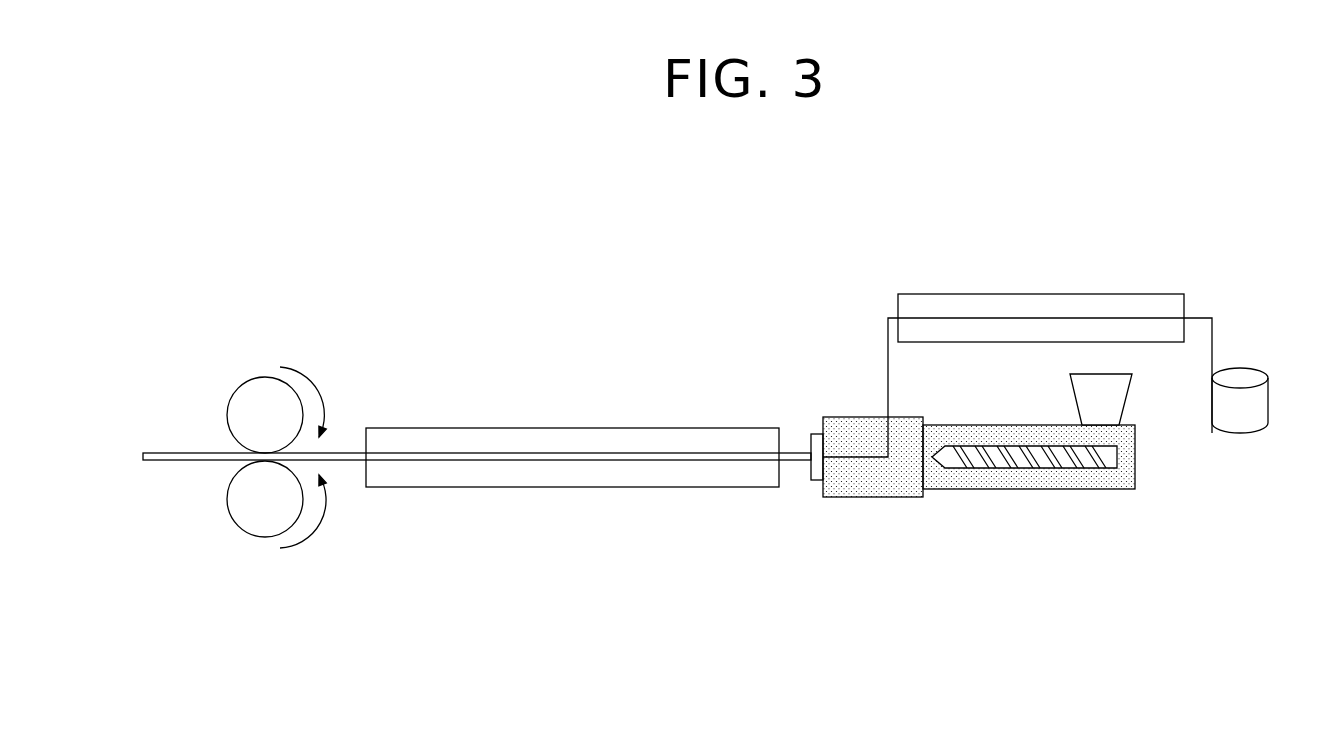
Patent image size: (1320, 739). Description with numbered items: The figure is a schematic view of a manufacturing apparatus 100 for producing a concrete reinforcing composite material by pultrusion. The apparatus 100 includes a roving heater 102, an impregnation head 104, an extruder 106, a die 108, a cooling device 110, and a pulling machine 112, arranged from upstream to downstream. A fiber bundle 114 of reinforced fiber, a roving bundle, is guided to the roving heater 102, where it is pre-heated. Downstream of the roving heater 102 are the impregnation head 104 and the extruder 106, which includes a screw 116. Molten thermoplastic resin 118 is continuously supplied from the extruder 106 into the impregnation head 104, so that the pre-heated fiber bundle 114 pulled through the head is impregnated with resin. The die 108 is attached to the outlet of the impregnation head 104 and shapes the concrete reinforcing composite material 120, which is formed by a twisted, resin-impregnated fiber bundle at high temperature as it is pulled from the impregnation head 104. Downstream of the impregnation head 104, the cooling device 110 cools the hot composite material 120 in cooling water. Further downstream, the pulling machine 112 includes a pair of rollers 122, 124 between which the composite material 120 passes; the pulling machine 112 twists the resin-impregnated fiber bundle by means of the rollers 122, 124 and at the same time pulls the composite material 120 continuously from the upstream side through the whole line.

The manufacturing apparatus 100 is at (666, 680).
The roving heater 102 is at (1042, 300).
The impregnation head 104 is at (907, 498).
The extruder 106 is at (1097, 492).
The die 108 is at (820, 482).
The cooling device 110 is at (572, 487).
The pulling machine 112 is at (215, 458).
The fiber bundle 114 is at (887, 347).
The screw 116 is at (1008, 468).
The molten thermoplastic resin 118 is at (862, 487).
The concrete reinforcing composite material 120 is at (168, 453).
The roller 122 is at (250, 380).
The roller 124 is at (252, 535).